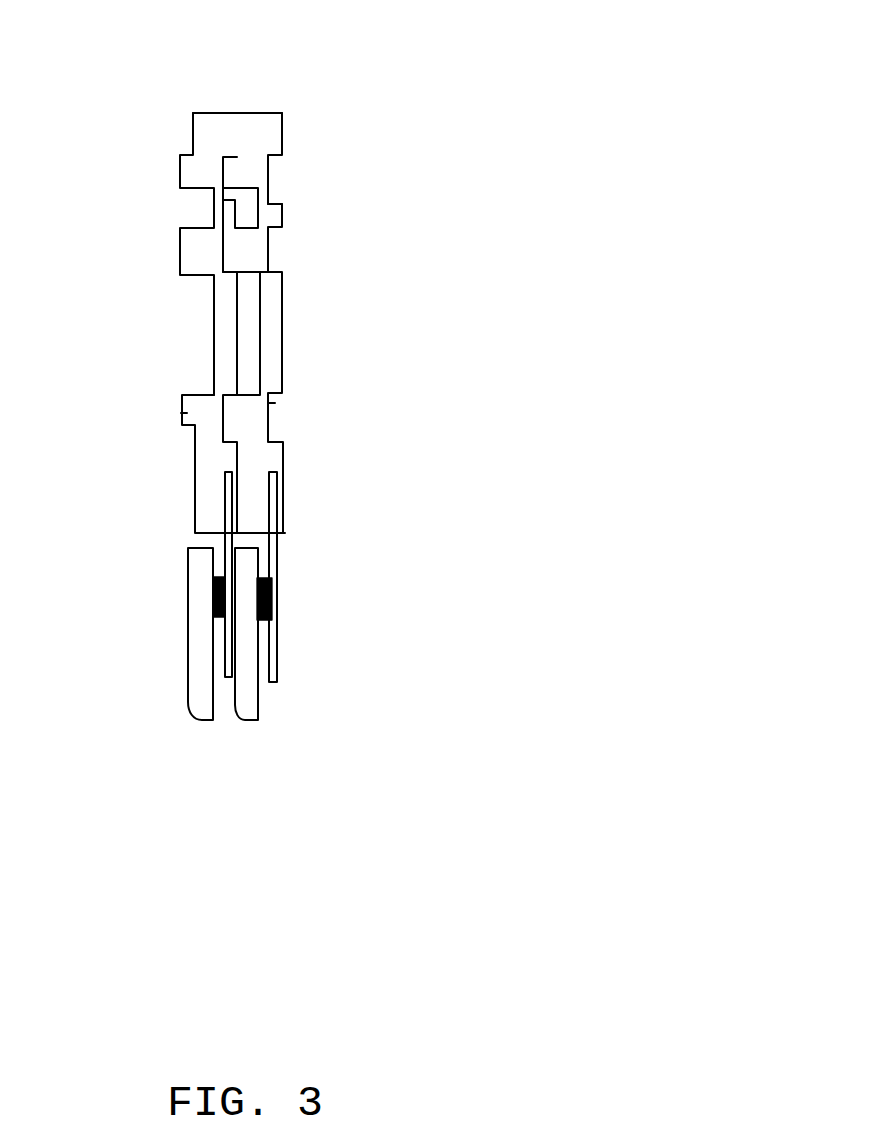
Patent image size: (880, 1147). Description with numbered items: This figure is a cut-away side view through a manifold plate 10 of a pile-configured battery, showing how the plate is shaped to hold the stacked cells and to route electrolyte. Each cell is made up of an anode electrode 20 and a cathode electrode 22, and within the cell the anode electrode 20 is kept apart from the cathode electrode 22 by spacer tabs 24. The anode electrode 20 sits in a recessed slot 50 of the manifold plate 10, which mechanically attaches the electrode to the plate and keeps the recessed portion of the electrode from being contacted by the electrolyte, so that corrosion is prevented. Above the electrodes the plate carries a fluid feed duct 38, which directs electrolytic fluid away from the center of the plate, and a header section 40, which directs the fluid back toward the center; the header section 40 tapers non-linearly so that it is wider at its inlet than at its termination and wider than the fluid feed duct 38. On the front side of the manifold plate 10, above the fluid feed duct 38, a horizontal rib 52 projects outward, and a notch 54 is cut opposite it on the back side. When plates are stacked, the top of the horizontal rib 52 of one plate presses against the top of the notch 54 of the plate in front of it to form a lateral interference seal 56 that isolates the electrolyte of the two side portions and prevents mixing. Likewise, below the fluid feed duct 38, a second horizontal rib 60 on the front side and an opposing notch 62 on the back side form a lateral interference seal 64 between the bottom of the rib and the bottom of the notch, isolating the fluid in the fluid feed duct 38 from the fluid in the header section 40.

The manifold plate 10 is at (212, 125).
The anode electrode 20 is at (277, 662).
The cathode electrode 22 is at (248, 701).
The spacer tabs 24 is at (272, 595).
The fluid feed duct 38 is at (248, 207).
The header section 40 is at (248, 334).
The recessed slot 50 is at (285, 523).
The horizontal rib 52 is at (180, 173).
The notch 54 is at (276, 178).
The lateral interference seal 56 is at (236, 157).
The horizontal rib 60 is at (180, 255).
The notch 62 is at (272, 252).
The lateral interference seal 64 is at (230, 274).